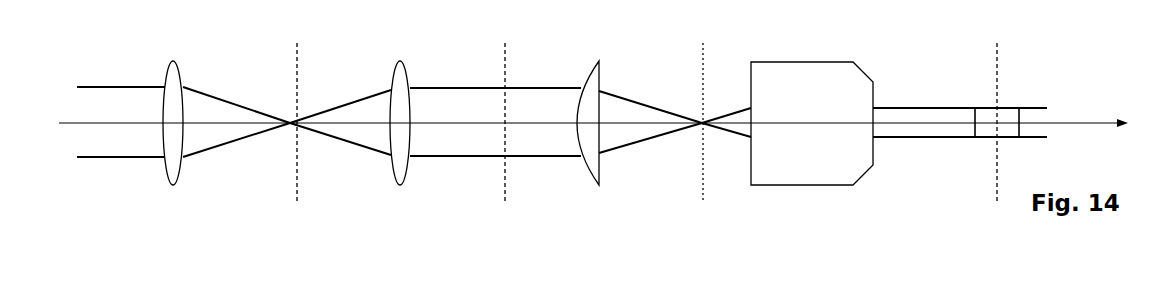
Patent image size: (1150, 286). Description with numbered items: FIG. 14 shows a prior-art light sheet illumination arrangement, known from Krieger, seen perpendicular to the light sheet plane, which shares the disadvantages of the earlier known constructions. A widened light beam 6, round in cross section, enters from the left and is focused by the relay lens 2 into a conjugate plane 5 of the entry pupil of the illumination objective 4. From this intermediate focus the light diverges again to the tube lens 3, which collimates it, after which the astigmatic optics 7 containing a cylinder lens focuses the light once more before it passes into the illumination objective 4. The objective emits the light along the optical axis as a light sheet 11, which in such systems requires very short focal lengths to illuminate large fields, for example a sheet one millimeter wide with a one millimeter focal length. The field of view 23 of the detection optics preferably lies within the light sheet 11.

The widened light beam 6 is at (115, 143).
The relay lens 2 is at (168, 165).
The conjugate plane 5 is at (297, 183).
The tube lens 3 is at (400, 167).
The astigmatic optics 7 is at (587, 167).
The illumination objective 4 is at (783, 186).
The light sheet 11 is at (975, 108).
The field of view 23 is at (1012, 108).